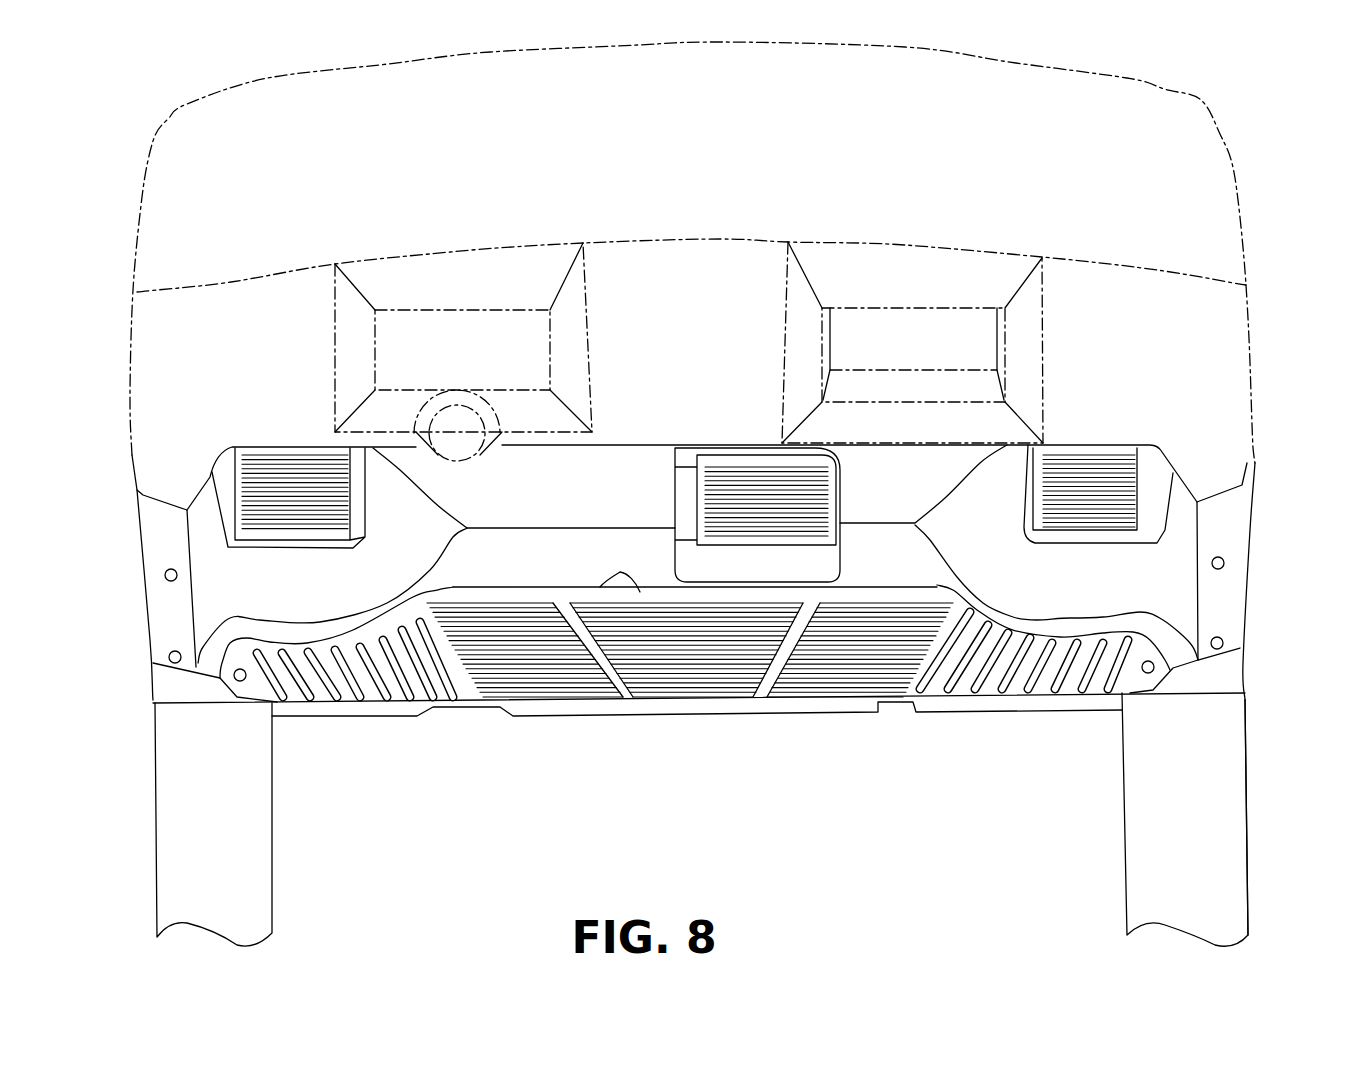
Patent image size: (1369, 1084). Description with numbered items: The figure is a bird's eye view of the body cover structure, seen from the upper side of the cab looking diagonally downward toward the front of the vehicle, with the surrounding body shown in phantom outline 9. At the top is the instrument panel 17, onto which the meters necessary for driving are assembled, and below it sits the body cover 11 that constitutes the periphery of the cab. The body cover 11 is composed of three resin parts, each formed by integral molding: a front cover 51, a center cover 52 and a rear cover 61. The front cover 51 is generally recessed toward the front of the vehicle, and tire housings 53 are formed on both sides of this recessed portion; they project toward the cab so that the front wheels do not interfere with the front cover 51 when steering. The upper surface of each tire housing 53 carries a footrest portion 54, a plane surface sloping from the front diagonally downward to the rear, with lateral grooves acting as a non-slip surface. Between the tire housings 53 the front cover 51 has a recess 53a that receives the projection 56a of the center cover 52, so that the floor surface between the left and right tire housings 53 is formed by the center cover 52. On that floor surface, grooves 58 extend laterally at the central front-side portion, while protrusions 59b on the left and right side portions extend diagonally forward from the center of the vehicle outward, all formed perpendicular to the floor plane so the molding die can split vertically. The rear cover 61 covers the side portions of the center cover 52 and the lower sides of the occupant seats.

The vehicle body 9 is at (1201, 193).
The instrument panel 17 is at (1201, 337).
The front cover 51 is at (1227, 535).
The center cover 52 is at (717, 710).
The tire housings 53 is at (243, 597).
The recess 53a is at (527, 590).
The footrest portion 54 is at (240, 473).
The projection 56a is at (640, 597).
The grooves 58 is at (807, 677).
The protrusions 59b is at (433, 705).
The body cover 11 is at (1247, 763).
The rear cover 61 is at (1235, 895).